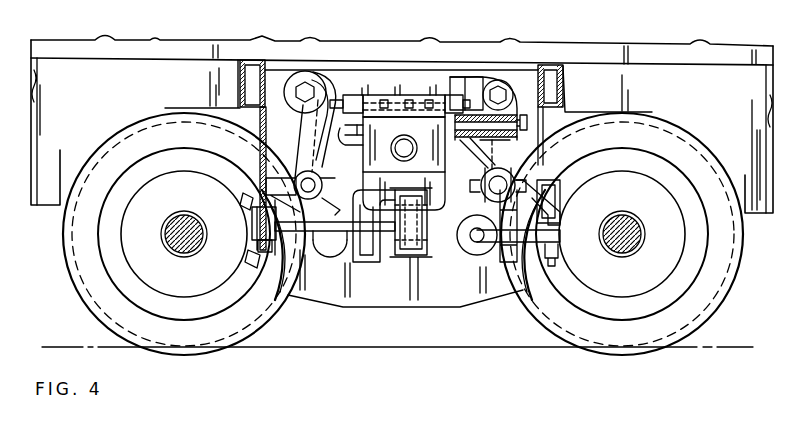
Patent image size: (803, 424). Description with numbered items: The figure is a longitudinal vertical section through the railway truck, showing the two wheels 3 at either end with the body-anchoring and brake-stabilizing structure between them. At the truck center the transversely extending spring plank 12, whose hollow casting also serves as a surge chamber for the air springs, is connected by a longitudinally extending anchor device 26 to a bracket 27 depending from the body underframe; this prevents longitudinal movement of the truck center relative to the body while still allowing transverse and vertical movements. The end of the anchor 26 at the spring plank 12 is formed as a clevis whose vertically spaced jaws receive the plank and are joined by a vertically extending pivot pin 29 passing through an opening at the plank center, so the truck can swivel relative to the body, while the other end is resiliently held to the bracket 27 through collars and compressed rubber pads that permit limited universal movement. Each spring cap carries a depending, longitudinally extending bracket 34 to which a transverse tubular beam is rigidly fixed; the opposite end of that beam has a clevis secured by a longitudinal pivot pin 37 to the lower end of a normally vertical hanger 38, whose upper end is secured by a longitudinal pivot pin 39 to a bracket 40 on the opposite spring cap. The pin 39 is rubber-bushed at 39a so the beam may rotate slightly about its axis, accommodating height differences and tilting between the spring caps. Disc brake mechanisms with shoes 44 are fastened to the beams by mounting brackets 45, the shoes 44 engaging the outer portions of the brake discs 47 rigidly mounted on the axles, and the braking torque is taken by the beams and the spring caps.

The wheels 3 is at (83, 300).
The spring plank 12 is at (428, 257).
The anchor device 26 is at (353, 260).
The bracket 27 is at (262, 130).
The pivot pin 29 is at (397, 268).
The bracket 34 is at (327, 157).
The pivot pin 37 is at (478, 188).
The hanger 38 is at (558, 121).
The pivot pin 39 is at (527, 122).
The rubber bushing 39a is at (485, 114).
The bracket 40 is at (469, 72).
The shoes 44 is at (273, 290).
The mounting brackets 45 is at (292, 168).
The brake discs 47 is at (403, 234).